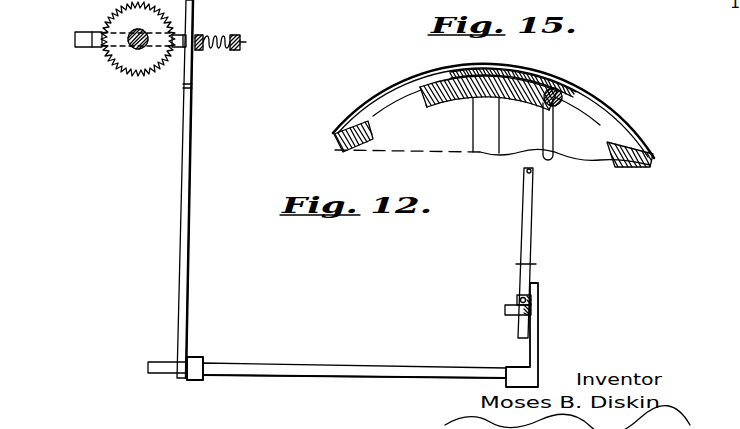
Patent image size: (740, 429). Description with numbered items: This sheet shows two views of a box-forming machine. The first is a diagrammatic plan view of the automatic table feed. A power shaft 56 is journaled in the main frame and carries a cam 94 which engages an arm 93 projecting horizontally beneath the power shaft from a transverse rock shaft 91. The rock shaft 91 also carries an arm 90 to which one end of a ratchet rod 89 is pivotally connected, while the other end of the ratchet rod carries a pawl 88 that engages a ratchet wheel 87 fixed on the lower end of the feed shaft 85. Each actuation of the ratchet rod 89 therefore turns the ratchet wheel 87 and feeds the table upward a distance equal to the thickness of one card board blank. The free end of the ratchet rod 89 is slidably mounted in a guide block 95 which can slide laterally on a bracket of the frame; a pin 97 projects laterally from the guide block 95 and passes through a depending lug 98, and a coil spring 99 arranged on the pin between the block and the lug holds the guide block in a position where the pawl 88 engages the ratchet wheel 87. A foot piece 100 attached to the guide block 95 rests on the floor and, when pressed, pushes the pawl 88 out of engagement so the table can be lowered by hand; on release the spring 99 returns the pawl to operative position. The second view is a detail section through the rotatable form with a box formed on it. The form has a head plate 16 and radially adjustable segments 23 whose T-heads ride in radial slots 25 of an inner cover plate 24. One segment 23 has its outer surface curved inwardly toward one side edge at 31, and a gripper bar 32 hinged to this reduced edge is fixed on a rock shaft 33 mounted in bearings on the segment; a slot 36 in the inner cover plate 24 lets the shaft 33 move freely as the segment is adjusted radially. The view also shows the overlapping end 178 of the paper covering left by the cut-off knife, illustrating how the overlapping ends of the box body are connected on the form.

In FIG. 15, the head plate 16 is at (427, 74).
In FIG. 15, the overlapping end 178 is at (490, 68).
In FIG. 15, the inwardly curved surface 31 is at (540, 85).
In FIG. 15, the gripper bar 32 is at (555, 88).
In FIG. 15, the rock shaft 33 is at (578, 99).
In FIG. 15, the segments 23 is at (340, 127).
In FIG. 15, the slot 36 is at (553, 128).
In FIG. 15, the inner cover plate 24 is at (405, 145).
In FIG. 15, the radial slots 25 is at (465, 150).
In FIG. 12, the power shaft 56 is at (528, 222).
In FIG. 12, the feed shaft 85 is at (133, 47).
In FIG. 12, the ratchet wheel 87 is at (110, 58).
In FIG. 12, the pawl 88 is at (173, 34).
In FIG. 12, the ratchet rod 89 is at (181, 183).
In FIG. 12, the arm 90 is at (193, 380).
In FIG. 12, the rock shaft 91 is at (289, 367).
In FIG. 12, the arm 93 is at (534, 345).
In FIG. 12, the cam 94 is at (506, 309).
In FIG. 12, the guide block 95 is at (198, 52).
In FIG. 12, the pin 97 is at (243, 42).
In FIG. 12, the lug 98 is at (230, 51).
In FIG. 12, the coil spring 99 is at (222, 48).
In FIG. 12, the foot piece 100 is at (75, 37).